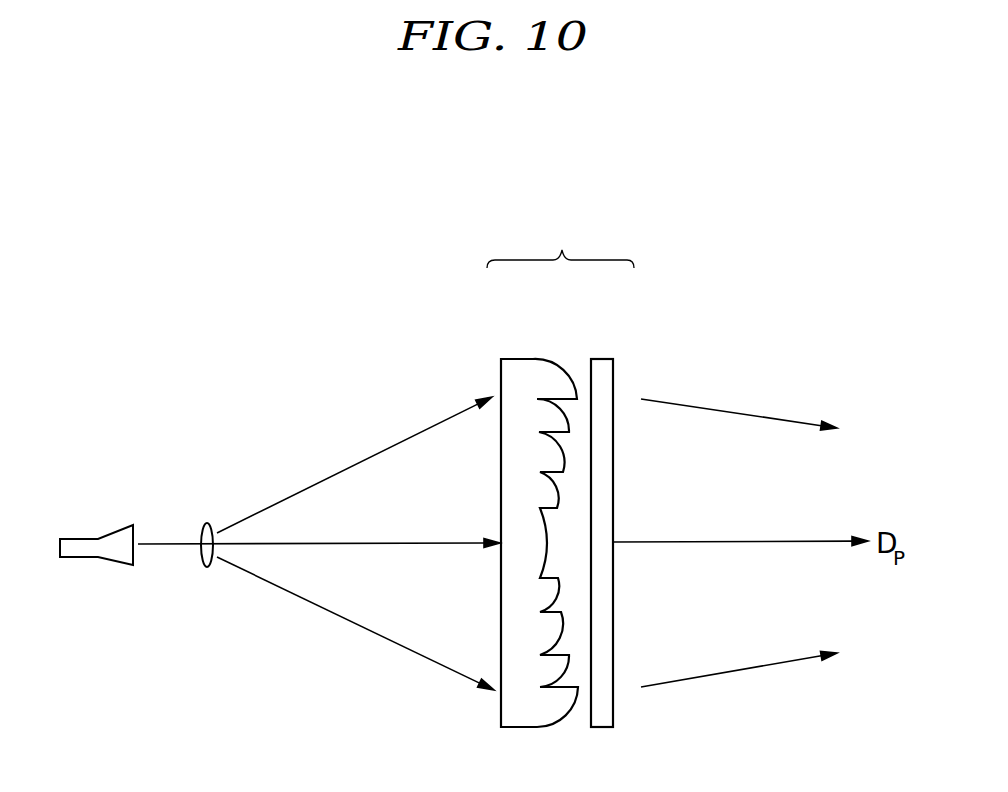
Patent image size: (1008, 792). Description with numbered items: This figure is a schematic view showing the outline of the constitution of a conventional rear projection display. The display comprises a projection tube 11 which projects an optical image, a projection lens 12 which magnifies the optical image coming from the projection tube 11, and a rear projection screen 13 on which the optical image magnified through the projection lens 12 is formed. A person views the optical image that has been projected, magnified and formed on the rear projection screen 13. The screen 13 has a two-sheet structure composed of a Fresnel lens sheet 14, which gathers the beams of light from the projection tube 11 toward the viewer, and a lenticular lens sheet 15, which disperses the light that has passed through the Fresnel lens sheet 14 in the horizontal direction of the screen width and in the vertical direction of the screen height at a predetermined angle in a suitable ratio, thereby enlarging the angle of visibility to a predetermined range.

The projection tube 11 is at (80, 538).
The projection lens 12 is at (208, 522).
The rear projection screen 13 is at (560, 243).
The Fresnel lens sheet 14 is at (518, 359).
The lenticular lens sheet 15 is at (604, 359).